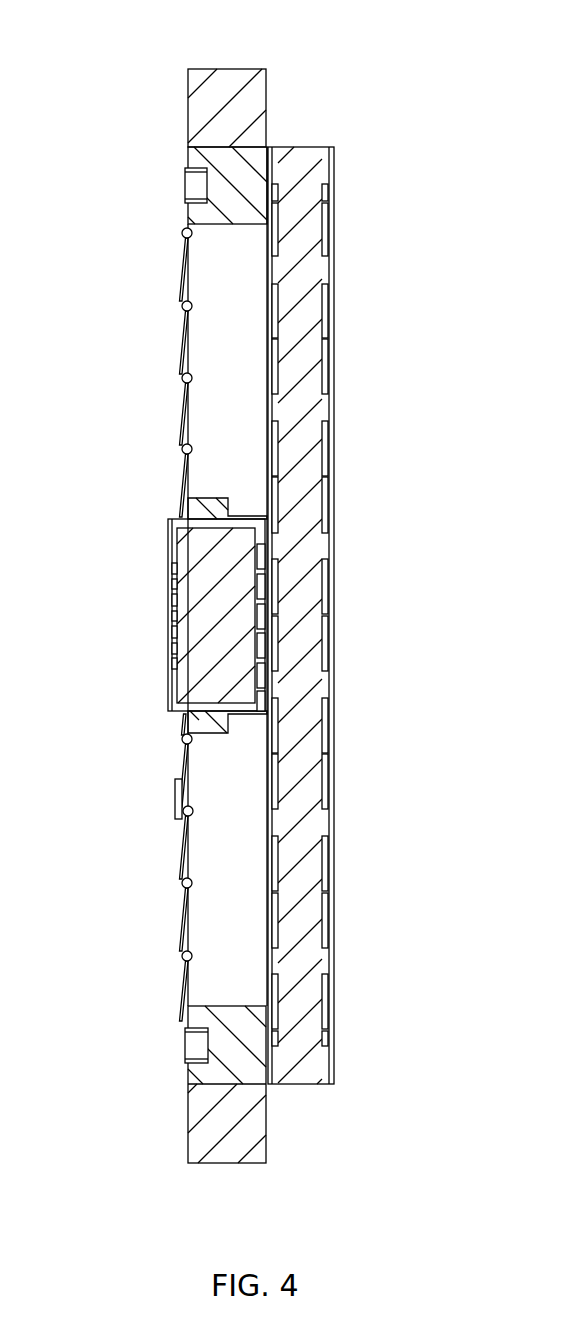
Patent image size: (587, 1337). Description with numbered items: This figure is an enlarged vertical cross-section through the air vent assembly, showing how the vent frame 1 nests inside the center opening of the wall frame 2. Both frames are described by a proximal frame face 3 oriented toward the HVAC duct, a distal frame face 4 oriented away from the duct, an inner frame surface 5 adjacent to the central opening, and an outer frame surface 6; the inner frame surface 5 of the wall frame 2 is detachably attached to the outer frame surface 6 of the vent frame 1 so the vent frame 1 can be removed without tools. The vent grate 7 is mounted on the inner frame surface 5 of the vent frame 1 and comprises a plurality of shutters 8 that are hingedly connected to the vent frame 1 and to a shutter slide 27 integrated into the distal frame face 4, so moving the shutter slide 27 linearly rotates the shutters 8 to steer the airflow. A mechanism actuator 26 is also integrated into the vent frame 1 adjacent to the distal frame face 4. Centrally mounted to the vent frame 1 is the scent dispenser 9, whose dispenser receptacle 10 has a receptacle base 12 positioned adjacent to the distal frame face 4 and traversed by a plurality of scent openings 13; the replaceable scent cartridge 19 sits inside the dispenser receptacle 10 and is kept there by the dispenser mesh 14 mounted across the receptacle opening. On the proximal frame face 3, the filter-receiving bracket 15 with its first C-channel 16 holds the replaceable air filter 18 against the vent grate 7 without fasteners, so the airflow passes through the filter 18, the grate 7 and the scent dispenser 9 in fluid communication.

The vent frame 1 is at (226, 588).
The wall frame 2 is at (270, 83).
The proximal frame face 3 is at (263, 219).
The distal frame face 4 is at (185, 82).
The inner frame surface 5 is at (262, 143).
The outer frame surface 6 is at (252, 65).
The vent grate 7 is at (146, 624).
The plurality of shutters 8 is at (183, 397).
The scent dispenser 9 is at (212, 488).
The dispenser receptacle 10 is at (208, 733).
The receptacle base 12 is at (188, 648).
The plurality of scent openings 13 is at (170, 586).
The dispenser mesh 14 is at (262, 714).
The filter-receiving bracket 15 is at (350, 615).
The first C-channel 16 is at (350, 615).
The replaceable air filter 18 is at (326, 546).
The replaceable scent cartridge 19 is at (234, 620).
The mechanism actuator 26 is at (187, 1045).
The shutter slide 27 is at (174, 781).